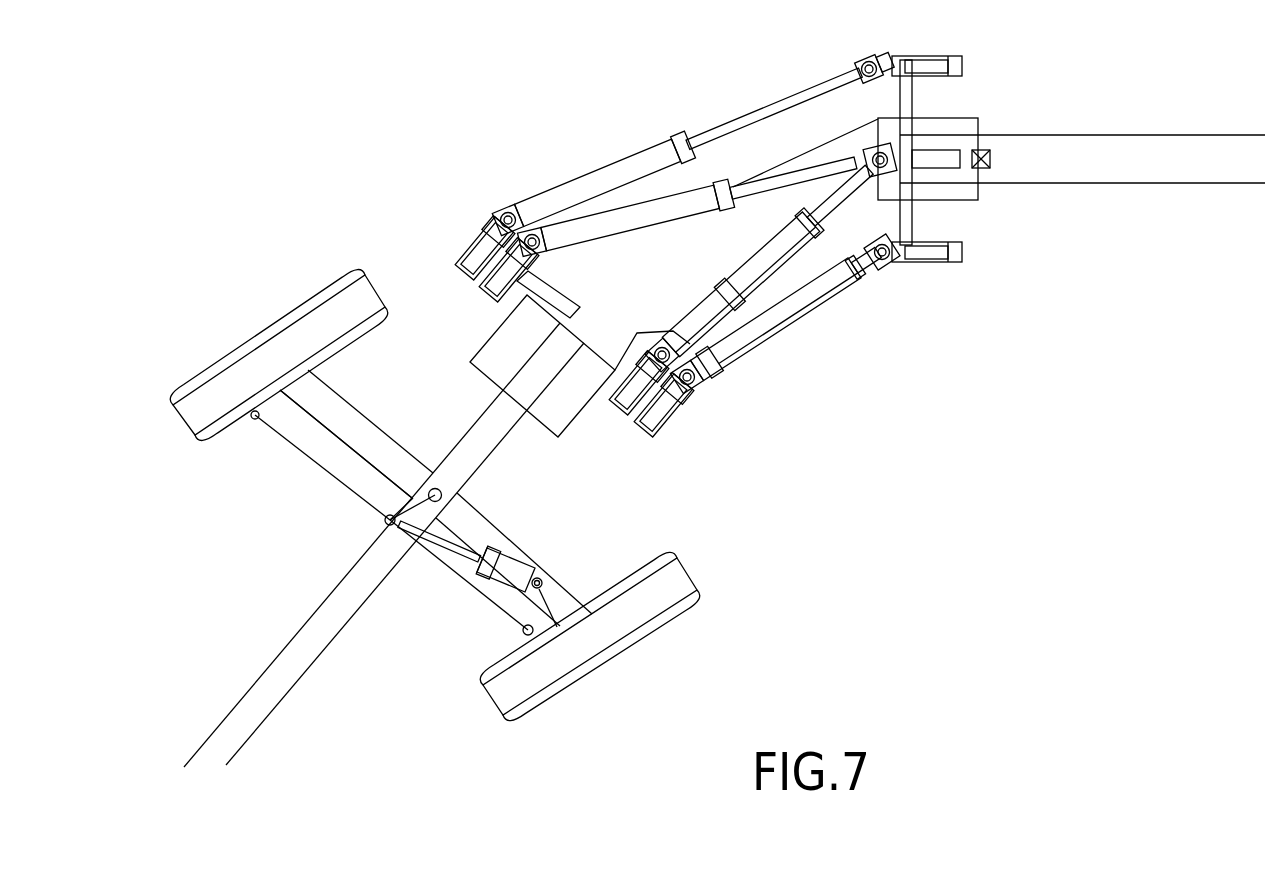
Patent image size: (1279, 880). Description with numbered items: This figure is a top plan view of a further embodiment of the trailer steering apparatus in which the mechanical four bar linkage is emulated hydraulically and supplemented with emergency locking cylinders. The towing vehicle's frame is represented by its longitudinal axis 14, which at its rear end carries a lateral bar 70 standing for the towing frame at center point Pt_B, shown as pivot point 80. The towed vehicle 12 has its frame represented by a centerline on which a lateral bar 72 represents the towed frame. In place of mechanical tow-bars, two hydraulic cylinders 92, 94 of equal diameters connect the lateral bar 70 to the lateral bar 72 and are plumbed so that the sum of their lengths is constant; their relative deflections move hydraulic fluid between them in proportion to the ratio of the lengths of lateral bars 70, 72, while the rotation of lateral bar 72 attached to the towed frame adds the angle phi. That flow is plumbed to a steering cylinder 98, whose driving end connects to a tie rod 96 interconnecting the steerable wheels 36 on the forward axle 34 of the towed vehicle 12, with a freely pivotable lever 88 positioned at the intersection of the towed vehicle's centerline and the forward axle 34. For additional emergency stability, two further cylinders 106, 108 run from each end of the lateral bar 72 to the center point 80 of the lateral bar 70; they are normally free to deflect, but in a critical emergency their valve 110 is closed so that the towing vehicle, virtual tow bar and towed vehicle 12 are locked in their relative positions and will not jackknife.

The towed vehicle 12 is at (287, 703).
The longitudinal axis 14 is at (1243, 133).
The forward axle 34 is at (372, 420).
The steerable wheels 36 is at (222, 362).
The lateral bar 70 is at (915, 118).
The lateral bar 72 is at (566, 318).
The pivot point Pt_B 80 is at (878, 150).
The lever 88 is at (415, 522).
The hydraulic cylinder 92 is at (560, 188).
The hydraulic cylinder 94 is at (763, 335).
The tie rod 96 is at (305, 457).
The steering cylinder 98 is at (522, 557).
The cylinder 106 is at (773, 280).
The cylinder 108 is at (657, 197).
The valve 110 is at (985, 170).